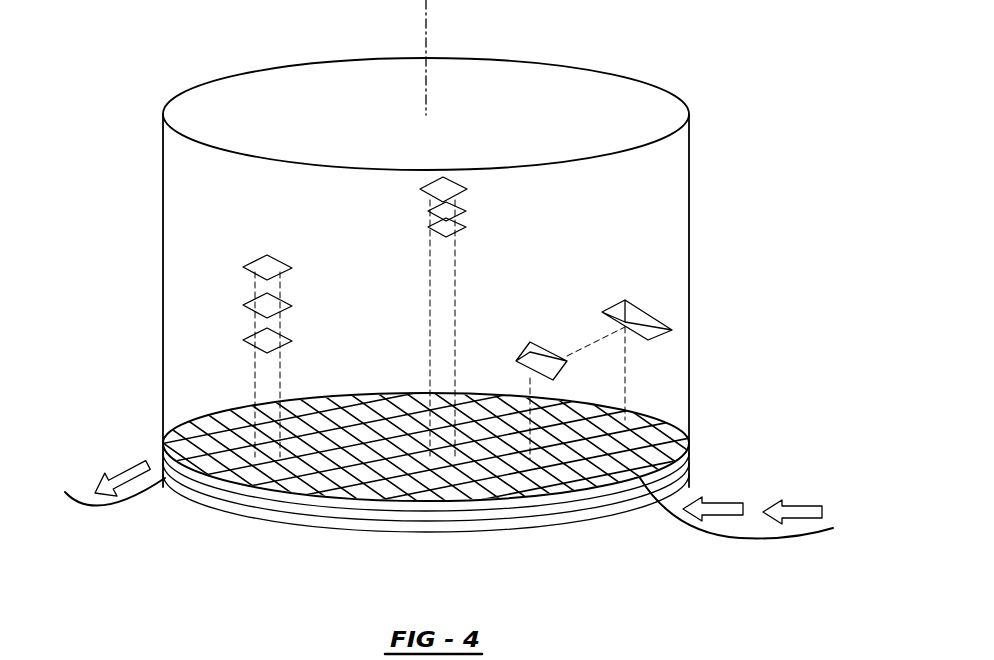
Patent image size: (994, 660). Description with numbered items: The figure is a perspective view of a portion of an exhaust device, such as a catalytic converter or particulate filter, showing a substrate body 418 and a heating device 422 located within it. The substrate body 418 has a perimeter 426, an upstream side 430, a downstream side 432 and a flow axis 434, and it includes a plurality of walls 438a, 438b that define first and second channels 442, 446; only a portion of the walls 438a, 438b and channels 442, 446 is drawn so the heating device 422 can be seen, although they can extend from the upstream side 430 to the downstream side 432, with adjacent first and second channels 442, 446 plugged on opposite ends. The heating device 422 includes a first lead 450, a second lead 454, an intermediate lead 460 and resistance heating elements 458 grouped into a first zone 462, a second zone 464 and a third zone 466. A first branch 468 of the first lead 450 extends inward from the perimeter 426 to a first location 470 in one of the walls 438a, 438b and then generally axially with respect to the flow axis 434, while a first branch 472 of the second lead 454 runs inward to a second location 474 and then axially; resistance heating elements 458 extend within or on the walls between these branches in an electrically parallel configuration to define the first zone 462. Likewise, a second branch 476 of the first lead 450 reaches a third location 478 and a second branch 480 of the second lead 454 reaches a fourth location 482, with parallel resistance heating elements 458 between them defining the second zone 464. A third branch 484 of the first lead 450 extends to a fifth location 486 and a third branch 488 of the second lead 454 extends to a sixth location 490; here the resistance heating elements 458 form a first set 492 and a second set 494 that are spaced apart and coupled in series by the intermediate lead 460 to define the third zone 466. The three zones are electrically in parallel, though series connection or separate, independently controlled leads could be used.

The substrate body 418 is at (690, 165).
The heating device 422 is at (660, 540).
The perimeter 426 is at (687, 468).
The upstream side 430 is at (652, 110).
The downstream side 432 is at (227, 520).
The flow axis 434 is at (426, 22).
The wall 438a is at (318, 410).
The wall 438b is at (385, 403).
The first channel 442 is at (338, 477).
The second channel 446 is at (367, 470).
The first lead 450 is at (753, 540).
The second lead 454 is at (87, 505).
The resistance heating element 458 is at (245, 336).
The intermediate lead 460 is at (588, 338).
The first zone 462 is at (560, 178).
The second zone 464 is at (250, 228).
The third zone 466 is at (657, 285).
The first branch of the first lead 468 is at (430, 267).
The first location 470 is at (423, 471).
The first branch of the second lead 472 is at (412, 200).
The second location 474 is at (467, 465).
The second branch of the first lead 476 is at (255, 375).
The third location 478 is at (162, 442).
The second branch of the second lead 480 is at (320, 350).
The fourth location 482 is at (290, 445).
The third branch of the first lead 484 is at (530, 380).
The fifth location 486 is at (528, 468).
The third branch of the second lead 488 is at (625, 383).
The sixth location 490 is at (603, 410).
The first set of resistance elements 492 is at (523, 347).
The second set of resistance elements 494 is at (660, 320).